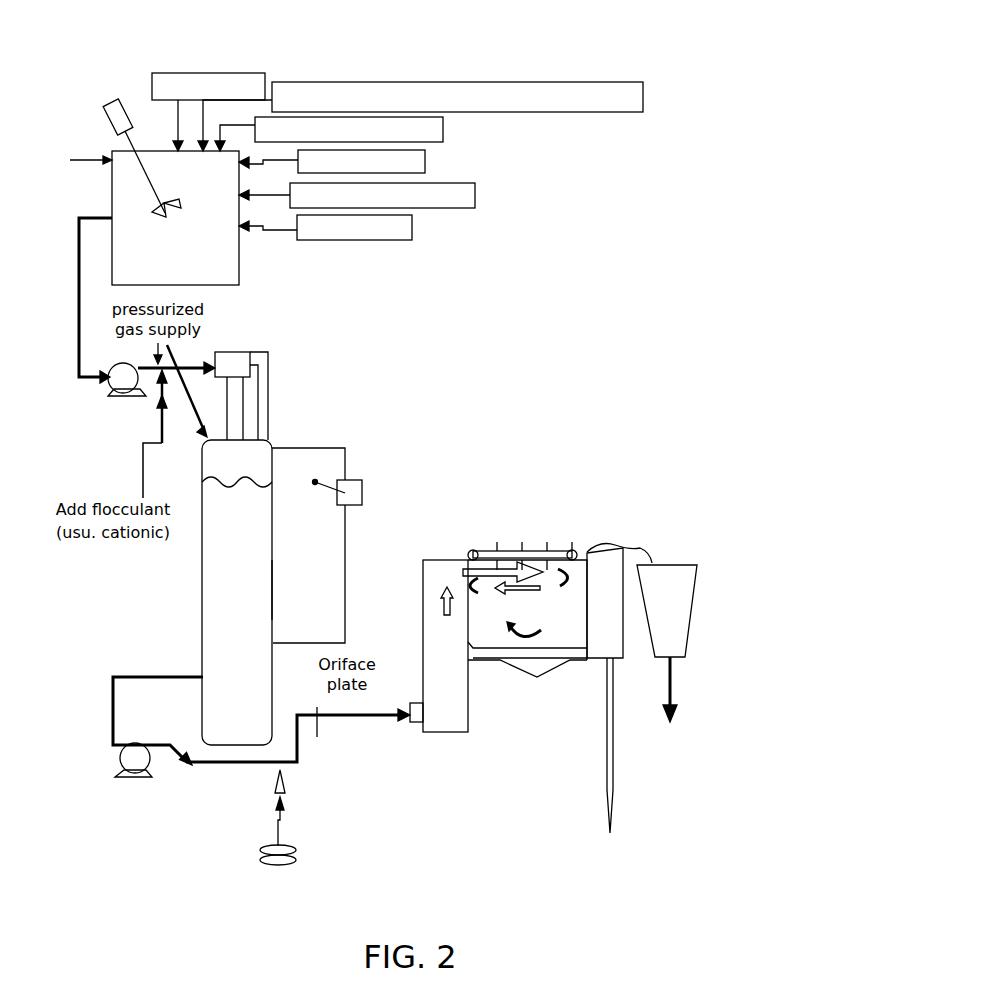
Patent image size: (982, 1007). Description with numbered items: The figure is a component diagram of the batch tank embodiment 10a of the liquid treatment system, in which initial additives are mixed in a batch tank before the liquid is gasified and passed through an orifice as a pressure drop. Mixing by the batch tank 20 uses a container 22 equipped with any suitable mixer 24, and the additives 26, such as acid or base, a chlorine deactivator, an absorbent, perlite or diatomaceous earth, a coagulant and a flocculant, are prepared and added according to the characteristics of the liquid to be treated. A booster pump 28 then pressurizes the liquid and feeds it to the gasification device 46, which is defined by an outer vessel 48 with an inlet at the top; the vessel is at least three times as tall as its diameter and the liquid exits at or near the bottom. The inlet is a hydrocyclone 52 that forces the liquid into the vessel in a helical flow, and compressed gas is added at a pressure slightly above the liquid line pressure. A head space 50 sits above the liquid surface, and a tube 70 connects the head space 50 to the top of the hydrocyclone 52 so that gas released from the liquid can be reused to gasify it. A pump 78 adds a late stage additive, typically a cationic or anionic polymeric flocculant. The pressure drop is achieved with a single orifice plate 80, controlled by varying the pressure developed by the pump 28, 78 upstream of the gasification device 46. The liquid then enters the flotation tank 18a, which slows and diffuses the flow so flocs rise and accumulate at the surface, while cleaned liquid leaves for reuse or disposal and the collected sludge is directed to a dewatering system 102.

The batch tank embodiment 10a is at (592, 240).
The flotation tank 18a is at (510, 692).
The batch tank 20 is at (250, 256).
The container 22 is at (112, 256).
The mixer 24 is at (124, 110).
The additives 26 is at (287, 82).
The booster pump 28 is at (107, 388).
The gasification device 46 is at (198, 599).
The outer vessel 48 is at (273, 588).
The head space 50 is at (250, 453).
The hydrocyclone 52 is at (233, 352).
The tube 70 is at (268, 412).
The pump 78 is at (280, 865).
The orifice plate 80 is at (318, 714).
The dewatering system 102 is at (693, 620).